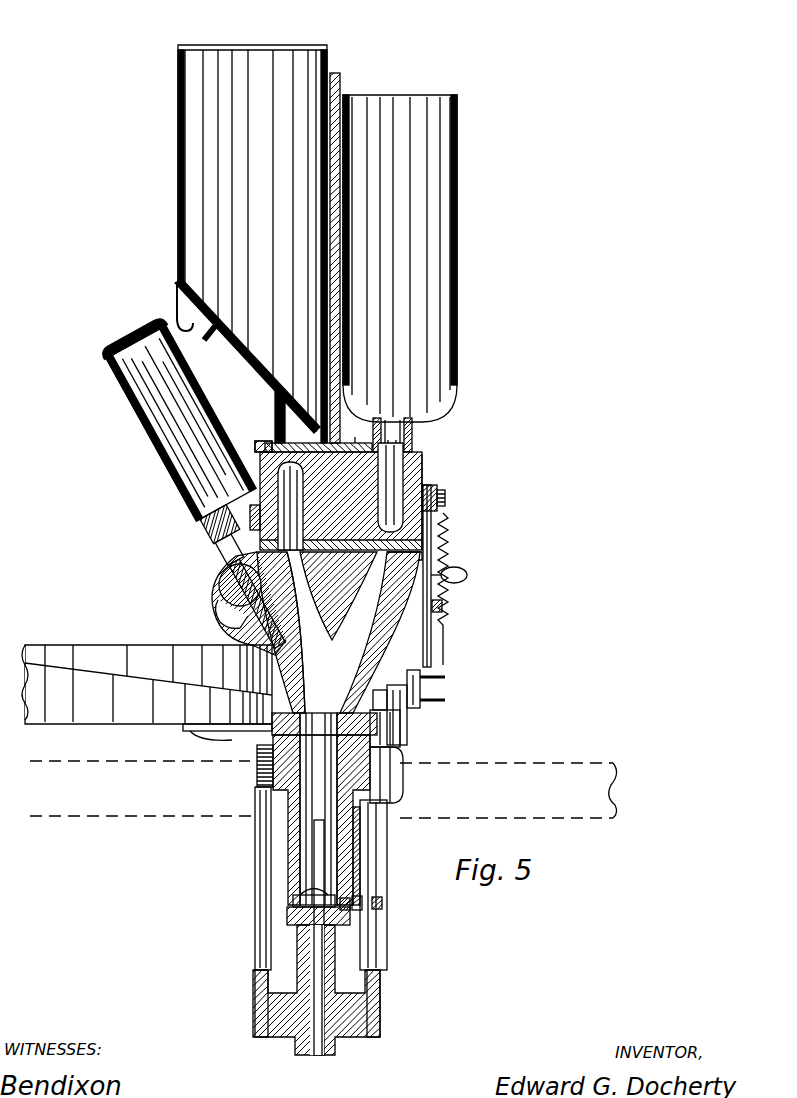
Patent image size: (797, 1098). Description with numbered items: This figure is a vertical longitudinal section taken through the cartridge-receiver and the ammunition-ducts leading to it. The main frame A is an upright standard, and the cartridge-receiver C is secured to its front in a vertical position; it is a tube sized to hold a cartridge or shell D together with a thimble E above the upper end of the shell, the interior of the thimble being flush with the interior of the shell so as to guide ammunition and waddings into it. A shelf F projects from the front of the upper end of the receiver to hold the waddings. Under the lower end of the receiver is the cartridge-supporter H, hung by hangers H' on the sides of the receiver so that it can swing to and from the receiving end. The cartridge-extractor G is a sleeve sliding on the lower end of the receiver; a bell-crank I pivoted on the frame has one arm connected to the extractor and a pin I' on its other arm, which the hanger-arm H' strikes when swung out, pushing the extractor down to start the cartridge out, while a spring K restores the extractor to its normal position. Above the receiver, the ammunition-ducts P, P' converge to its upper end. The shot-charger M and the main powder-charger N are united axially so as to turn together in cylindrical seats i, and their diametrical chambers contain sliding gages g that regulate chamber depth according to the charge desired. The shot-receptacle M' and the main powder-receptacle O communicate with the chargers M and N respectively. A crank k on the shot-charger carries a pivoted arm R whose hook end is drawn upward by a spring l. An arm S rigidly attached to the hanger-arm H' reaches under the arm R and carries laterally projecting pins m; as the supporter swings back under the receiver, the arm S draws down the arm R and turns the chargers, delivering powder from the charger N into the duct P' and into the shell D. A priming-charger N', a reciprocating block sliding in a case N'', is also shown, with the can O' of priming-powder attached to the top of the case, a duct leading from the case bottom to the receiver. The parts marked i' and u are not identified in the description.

The main powder-receptacle O is at (252, 244).
The can O' is at (215, 484).
The main frame A is at (341, 78).
The shot-receptacle M' is at (400, 282).
The shot-charger M is at (440, 501).
The main powder-charger N is at (254, 441).
The priming-charger N' is at (241, 603).
The case N'' is at (221, 614).
The annular or cylindrical seats i is at (347, 434).
The passage i' is at (310, 483).
The gages g is at (338, 495).
The pin u is at (250, 516).
The spring l is at (445, 525).
The crank k is at (448, 546).
The arm R is at (435, 632).
The ammunition-duct P is at (339, 632).
The ammunition-duct P' is at (316, 632).
The shelf F is at (147, 692).
The arm S is at (403, 730).
The laterally-projecting pins m is at (440, 689).
The thimble E is at (324, 730).
The cartridge-receiver C is at (321, 809).
The cartridge or shell D is at (300, 870).
The cartridge-extractor G is at (268, 878).
The bell-crank I is at (376, 885).
The pin I' is at (372, 902).
The spring K is at (336, 952).
The cartridge-supporter H is at (316, 990).
The hangers H' is at (318, 974).